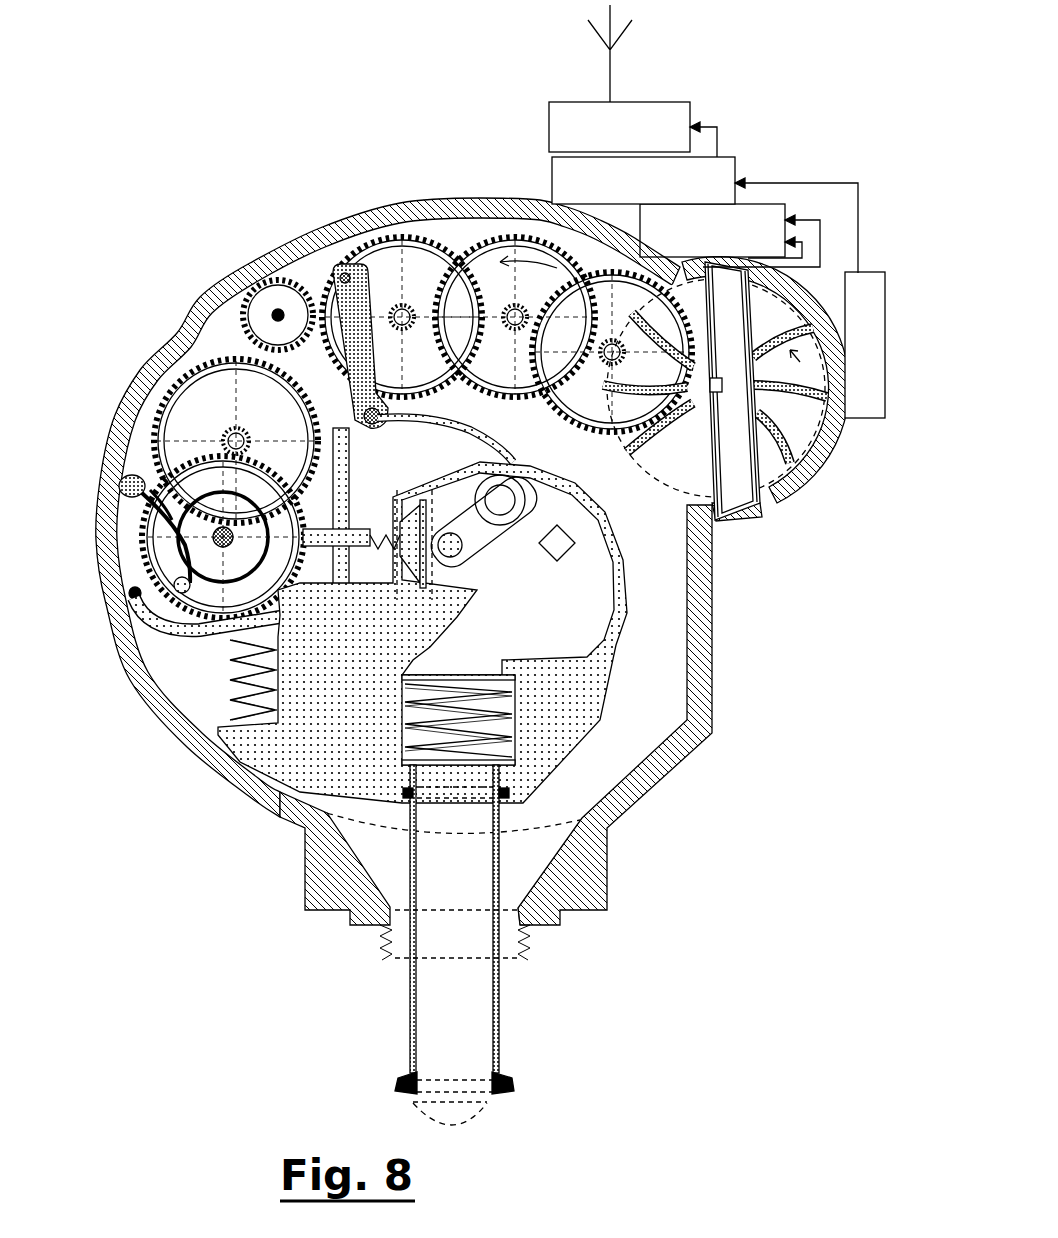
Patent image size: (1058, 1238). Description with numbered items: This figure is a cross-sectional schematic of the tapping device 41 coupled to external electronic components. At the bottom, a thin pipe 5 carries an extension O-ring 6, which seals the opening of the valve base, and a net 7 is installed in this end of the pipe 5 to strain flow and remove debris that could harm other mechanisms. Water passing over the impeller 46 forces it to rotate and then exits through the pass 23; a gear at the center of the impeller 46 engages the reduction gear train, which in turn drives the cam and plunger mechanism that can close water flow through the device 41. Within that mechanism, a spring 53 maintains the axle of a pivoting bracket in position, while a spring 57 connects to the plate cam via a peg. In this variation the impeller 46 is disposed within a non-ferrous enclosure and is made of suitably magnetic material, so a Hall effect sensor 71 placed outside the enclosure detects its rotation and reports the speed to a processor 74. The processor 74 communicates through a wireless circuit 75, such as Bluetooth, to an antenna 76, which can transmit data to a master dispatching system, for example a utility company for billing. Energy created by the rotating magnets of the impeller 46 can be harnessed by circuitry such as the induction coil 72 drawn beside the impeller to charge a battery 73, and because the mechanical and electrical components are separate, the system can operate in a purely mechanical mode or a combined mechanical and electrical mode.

The device 41 is at (383, 203).
The spring 53 is at (366, 410).
The spring 57 is at (175, 513).
The impeller 46 is at (823, 427).
The induction coil 72 is at (747, 520).
The Hall effect sensor 71 is at (865, 418).
The battery 73 is at (779, 210).
The processor 74 is at (552, 182).
The wireless circuit 75 is at (662, 107).
The antenna 76 is at (607, 70).
The pipe 5 is at (498, 1015).
The pass 23 is at (513, 930).
The extension O-ring 6 is at (508, 1085).
The net 7 is at (480, 1113).